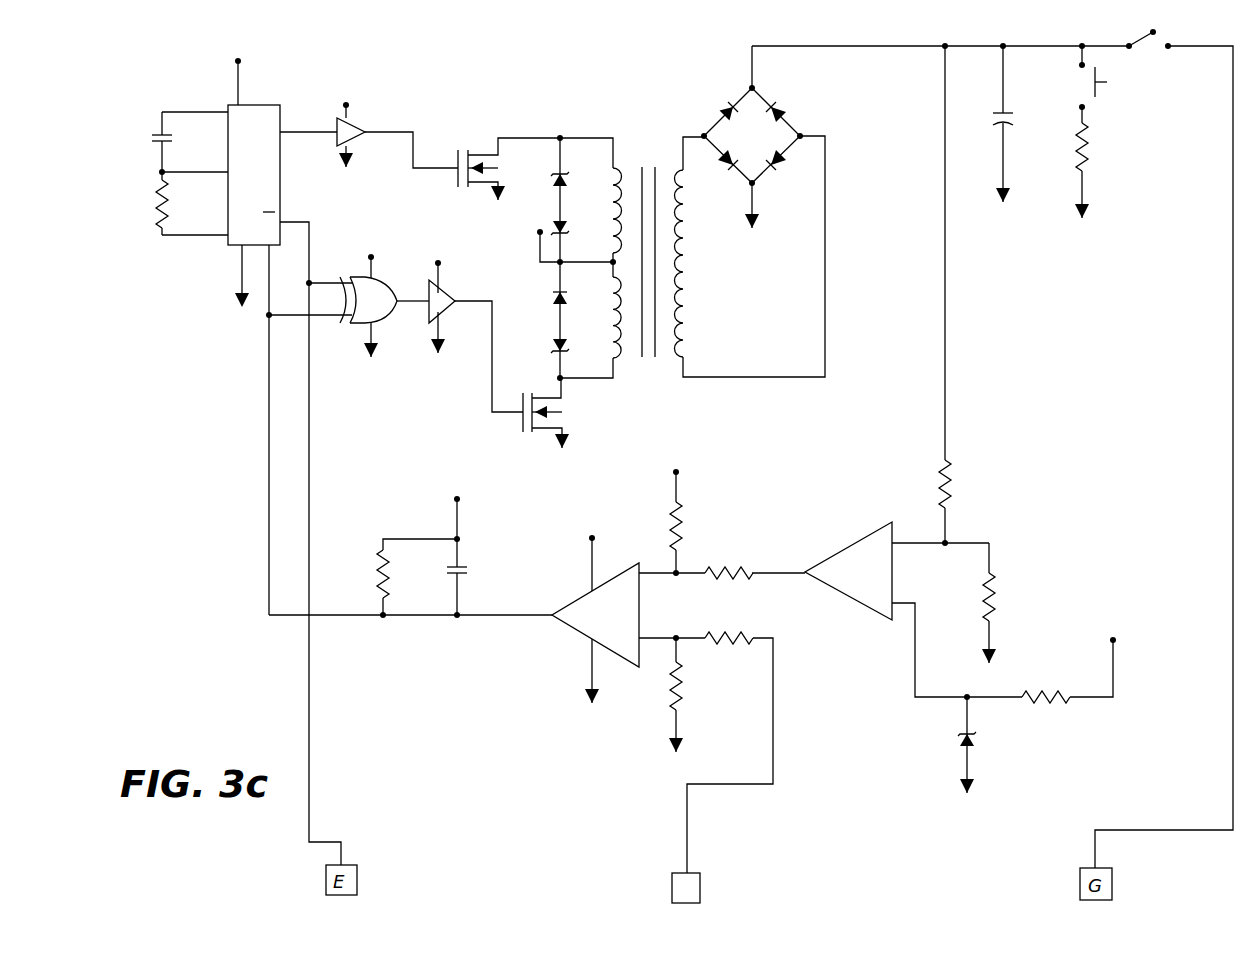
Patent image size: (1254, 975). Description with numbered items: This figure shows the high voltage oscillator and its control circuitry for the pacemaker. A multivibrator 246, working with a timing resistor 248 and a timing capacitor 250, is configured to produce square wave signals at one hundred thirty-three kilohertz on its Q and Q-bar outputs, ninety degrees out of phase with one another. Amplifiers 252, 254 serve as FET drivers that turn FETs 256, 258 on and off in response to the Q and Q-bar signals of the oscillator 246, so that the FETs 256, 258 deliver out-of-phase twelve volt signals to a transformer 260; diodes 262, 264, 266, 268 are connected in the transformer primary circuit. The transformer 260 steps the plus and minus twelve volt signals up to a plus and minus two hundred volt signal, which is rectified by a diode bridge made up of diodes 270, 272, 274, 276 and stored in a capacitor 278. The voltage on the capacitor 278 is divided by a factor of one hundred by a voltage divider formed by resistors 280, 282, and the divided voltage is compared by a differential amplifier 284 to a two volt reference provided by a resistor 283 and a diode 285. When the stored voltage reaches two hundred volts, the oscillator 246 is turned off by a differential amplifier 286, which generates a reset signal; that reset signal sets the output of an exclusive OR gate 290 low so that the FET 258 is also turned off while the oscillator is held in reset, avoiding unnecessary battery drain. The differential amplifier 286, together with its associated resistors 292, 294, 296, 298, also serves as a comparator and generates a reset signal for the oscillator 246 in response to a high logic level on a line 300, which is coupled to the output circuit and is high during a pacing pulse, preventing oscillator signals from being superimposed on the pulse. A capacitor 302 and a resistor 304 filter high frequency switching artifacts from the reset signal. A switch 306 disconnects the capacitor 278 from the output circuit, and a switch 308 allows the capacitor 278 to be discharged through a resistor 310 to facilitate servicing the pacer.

The multivibrator 246 is at (257, 245).
The timing resistor 248 is at (143, 200).
The timing capacitor 250 is at (155, 135).
The amplifier 252 is at (370, 126).
The amplifier 254 is at (448, 306).
The FET 256 is at (478, 148).
The FET 258 is at (521, 420).
The transformer 260 is at (648, 160).
The diode 262 is at (566, 188).
The diode 264 is at (566, 232).
The diode 266 is at (580, 290).
The diode 268 is at (566, 352).
The diode 270 is at (727, 170).
The diode 272 is at (785, 166).
The diode 274 is at (718, 110).
The diode 276 is at (793, 115).
The capacitor 278 is at (1000, 126).
The resistor 280 is at (958, 500).
The resistor 282 is at (1003, 606).
The resistor 283 is at (1045, 704).
The differential amplifier 284 is at (856, 540).
The diode 285 is at (975, 760).
The differential amplifier 286 is at (585, 627).
The exclusive OR gate 290 is at (360, 330).
The resistor 292 is at (684, 513).
The resistor 294 is at (724, 565).
The resistor 296 is at (725, 646).
The resistor 298 is at (688, 706).
The line 300 is at (778, 746).
The capacitor 302 is at (466, 571).
The resistor 304 is at (375, 575).
The switch 306 is at (1150, 48).
The switch 308 is at (1101, 88).
The resistor 310 is at (1090, 165).